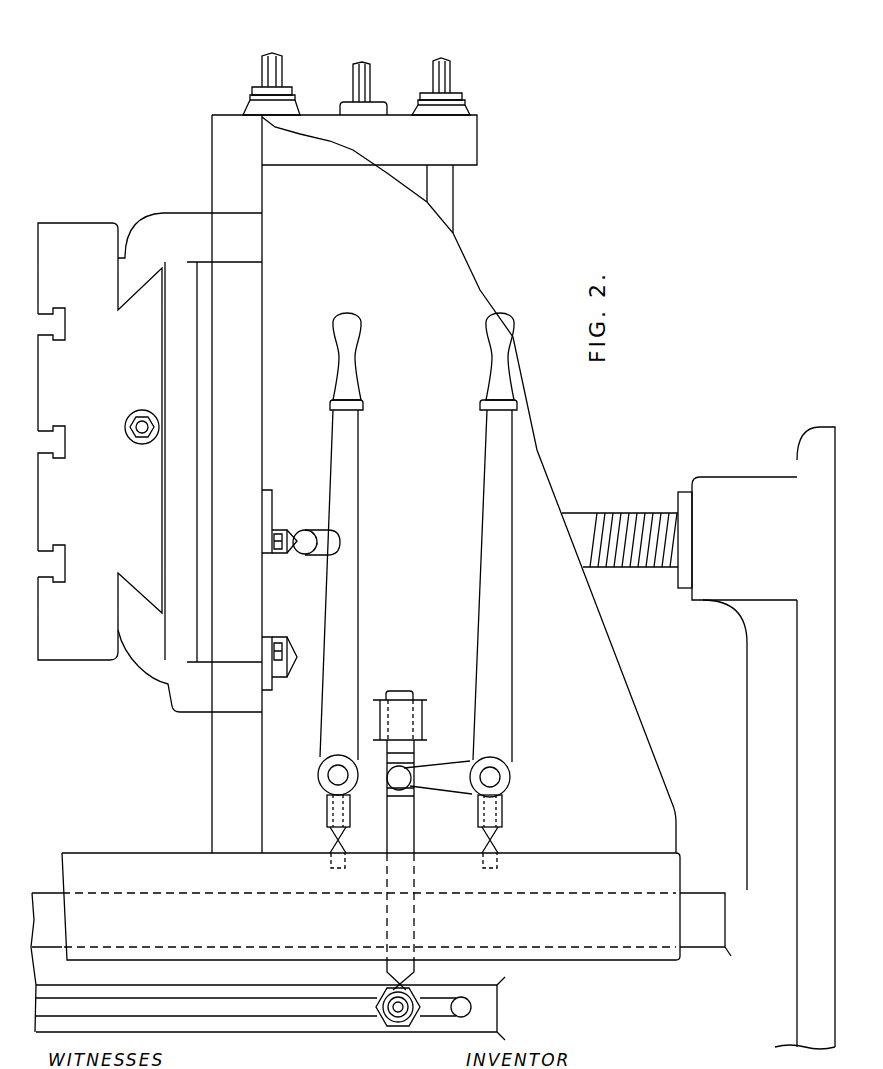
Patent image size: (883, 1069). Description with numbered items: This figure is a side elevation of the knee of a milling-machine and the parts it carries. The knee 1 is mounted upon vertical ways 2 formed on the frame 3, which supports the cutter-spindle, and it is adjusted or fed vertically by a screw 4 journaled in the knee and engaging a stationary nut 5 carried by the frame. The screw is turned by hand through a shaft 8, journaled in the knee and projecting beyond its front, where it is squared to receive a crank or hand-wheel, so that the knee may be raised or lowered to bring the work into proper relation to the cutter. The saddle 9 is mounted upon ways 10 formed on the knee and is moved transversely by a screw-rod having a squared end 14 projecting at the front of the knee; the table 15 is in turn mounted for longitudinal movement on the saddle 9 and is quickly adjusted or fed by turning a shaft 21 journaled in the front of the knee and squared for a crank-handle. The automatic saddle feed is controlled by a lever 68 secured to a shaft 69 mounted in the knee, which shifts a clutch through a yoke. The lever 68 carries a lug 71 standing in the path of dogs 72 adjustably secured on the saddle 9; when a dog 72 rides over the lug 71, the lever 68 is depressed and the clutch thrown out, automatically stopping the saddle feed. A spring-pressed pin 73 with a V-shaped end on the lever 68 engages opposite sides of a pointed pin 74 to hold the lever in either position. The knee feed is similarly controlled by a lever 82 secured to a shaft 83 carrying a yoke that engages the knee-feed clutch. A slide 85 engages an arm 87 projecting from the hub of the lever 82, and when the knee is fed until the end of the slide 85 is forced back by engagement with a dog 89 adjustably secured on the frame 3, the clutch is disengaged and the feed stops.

The knee 1 is at (527, 443).
The vertical ways 2 is at (701, 948).
The frame 3 is at (748, 920).
The screw 4 is at (612, 513).
The stationary nut 5 is at (685, 492).
The shaft 8 is at (446, 82).
The saddle 9 is at (163, 230).
The ways 10 is at (215, 181).
The squared end 14 is at (277, 62).
The table 15 is at (68, 232).
The shaft 21 is at (360, 88).
The lever 68 is at (357, 482).
The shaft 69 is at (330, 770).
The lug 71 is at (305, 540).
The dogs 72 is at (272, 530).
The spring-pressed pin 73 is at (330, 838).
The pointed pin 74 is at (346, 852).
The lever 82 is at (483, 640).
The shaft 83 is at (490, 772).
The slide 85 is at (409, 846).
The arm 87 is at (440, 770).
The dog 89 is at (411, 992).